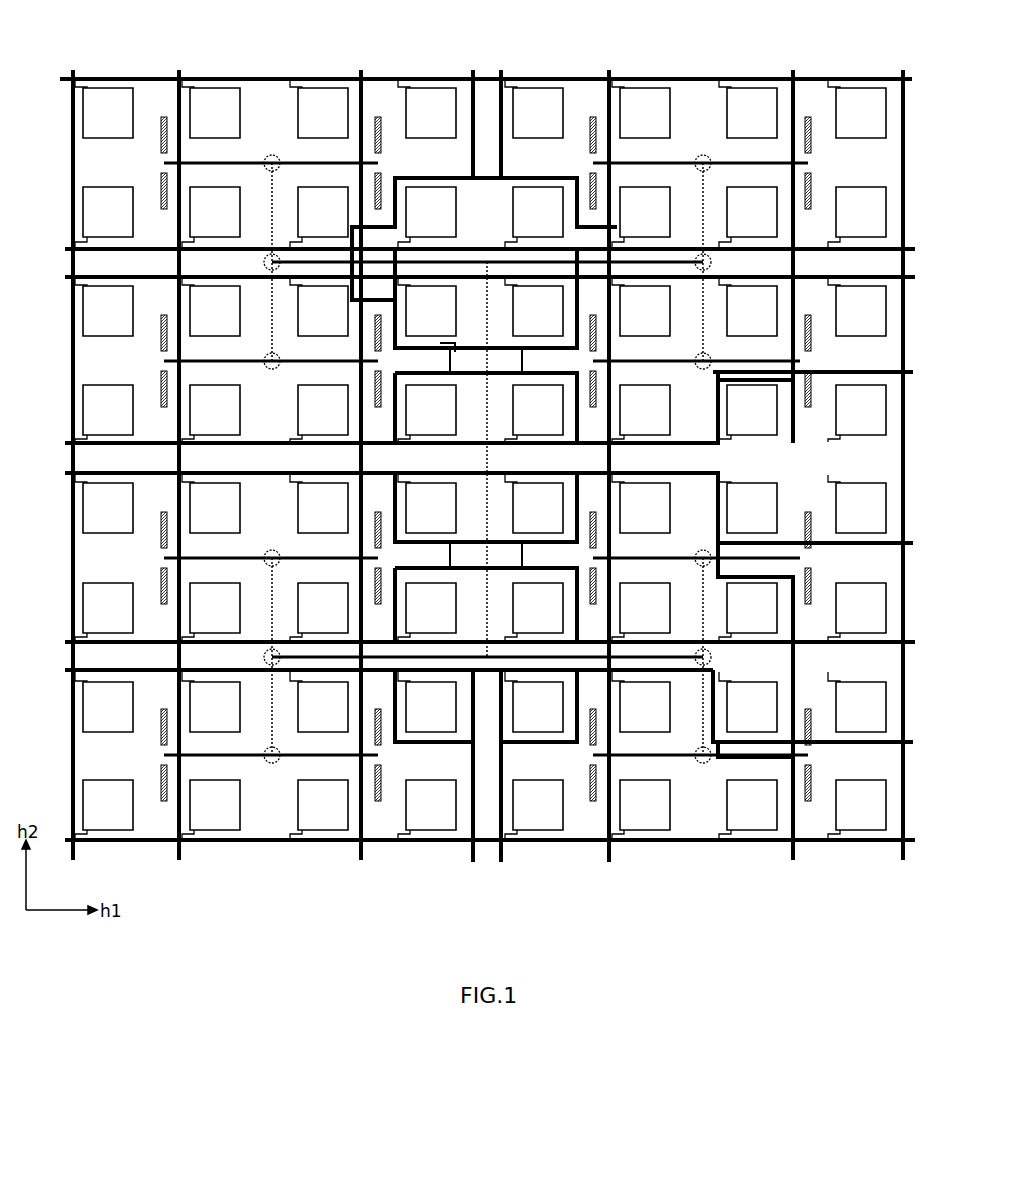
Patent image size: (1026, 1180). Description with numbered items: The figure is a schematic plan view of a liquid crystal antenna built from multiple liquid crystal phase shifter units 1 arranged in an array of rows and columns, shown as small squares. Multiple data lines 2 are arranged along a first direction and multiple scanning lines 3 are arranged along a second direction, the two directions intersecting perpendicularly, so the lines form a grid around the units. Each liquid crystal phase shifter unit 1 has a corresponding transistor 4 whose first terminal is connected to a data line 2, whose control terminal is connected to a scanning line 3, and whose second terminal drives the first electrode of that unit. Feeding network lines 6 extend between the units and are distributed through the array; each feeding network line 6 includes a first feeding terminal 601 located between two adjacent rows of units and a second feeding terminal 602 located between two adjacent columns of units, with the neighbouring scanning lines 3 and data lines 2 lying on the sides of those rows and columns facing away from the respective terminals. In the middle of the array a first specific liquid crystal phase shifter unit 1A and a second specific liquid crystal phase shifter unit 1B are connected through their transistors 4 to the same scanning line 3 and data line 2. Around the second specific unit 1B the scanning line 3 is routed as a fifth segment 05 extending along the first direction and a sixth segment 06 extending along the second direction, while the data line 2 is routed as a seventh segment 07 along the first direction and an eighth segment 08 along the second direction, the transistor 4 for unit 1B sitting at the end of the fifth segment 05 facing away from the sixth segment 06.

The liquid crystal phase shifter unit 1 is at (325, 95).
The first specific liquid crystal phase shifter unit 1A is at (538, 212).
The second specific liquid crystal phase shifter unit 1B is at (431, 311).
The data line 2 is at (599, 918).
The scanning line 3 is at (78, 277).
The transistor 4 is at (455, 342).
The fifth segment 05 is at (396, 302).
The sixth segment 06 is at (440, 348).
The seventh segment 07 is at (400, 318).
The eighth segment 08 is at (450, 343).
The feeding network line 6 is at (766, 760).
The first feeding terminal 601 is at (703, 763).
The second feeding terminal 602 is at (711, 657).